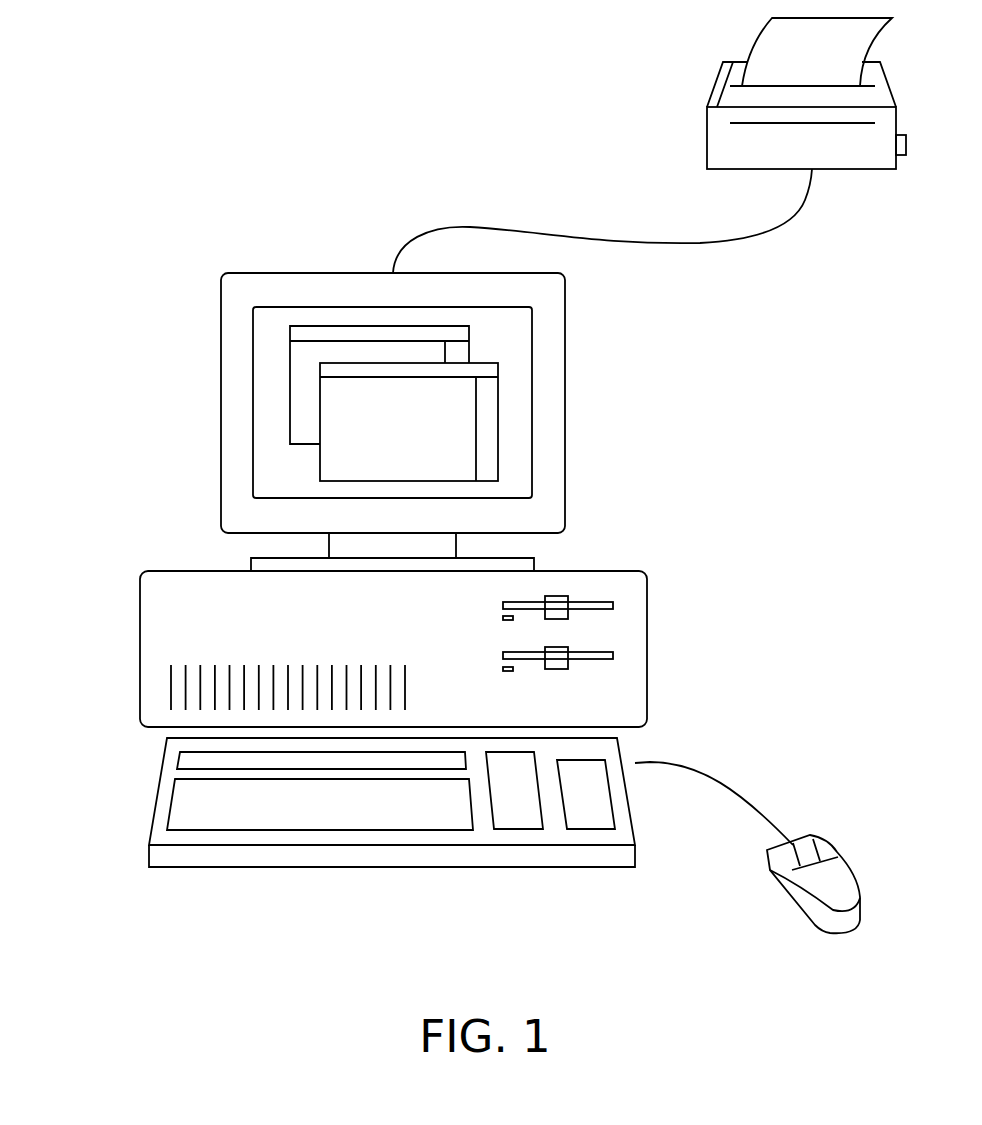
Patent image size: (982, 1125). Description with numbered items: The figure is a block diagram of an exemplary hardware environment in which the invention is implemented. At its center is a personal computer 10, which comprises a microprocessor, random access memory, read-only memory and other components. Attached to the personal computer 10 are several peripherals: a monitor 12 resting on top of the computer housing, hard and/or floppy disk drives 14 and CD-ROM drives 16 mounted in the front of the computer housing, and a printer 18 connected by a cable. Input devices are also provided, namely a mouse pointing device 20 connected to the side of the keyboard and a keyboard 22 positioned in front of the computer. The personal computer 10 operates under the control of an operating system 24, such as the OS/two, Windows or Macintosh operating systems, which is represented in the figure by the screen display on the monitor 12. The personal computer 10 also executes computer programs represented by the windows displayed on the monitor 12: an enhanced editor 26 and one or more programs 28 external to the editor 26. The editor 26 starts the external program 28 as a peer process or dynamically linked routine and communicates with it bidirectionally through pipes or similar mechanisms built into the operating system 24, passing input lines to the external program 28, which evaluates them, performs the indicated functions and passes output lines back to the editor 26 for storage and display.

The personal computer 10 is at (125, 683).
The monitor 12 is at (583, 405).
The floppy disk drive 14 is at (621, 597).
The CD-ROM drive 16 is at (626, 651).
The printer 18 is at (680, 134).
The mouse pointing device 20 is at (816, 950).
The keyboard 22 is at (384, 879).
The operating system 24 is at (205, 627).
The editor 26 is at (402, 356).
The external program 28 is at (294, 322).